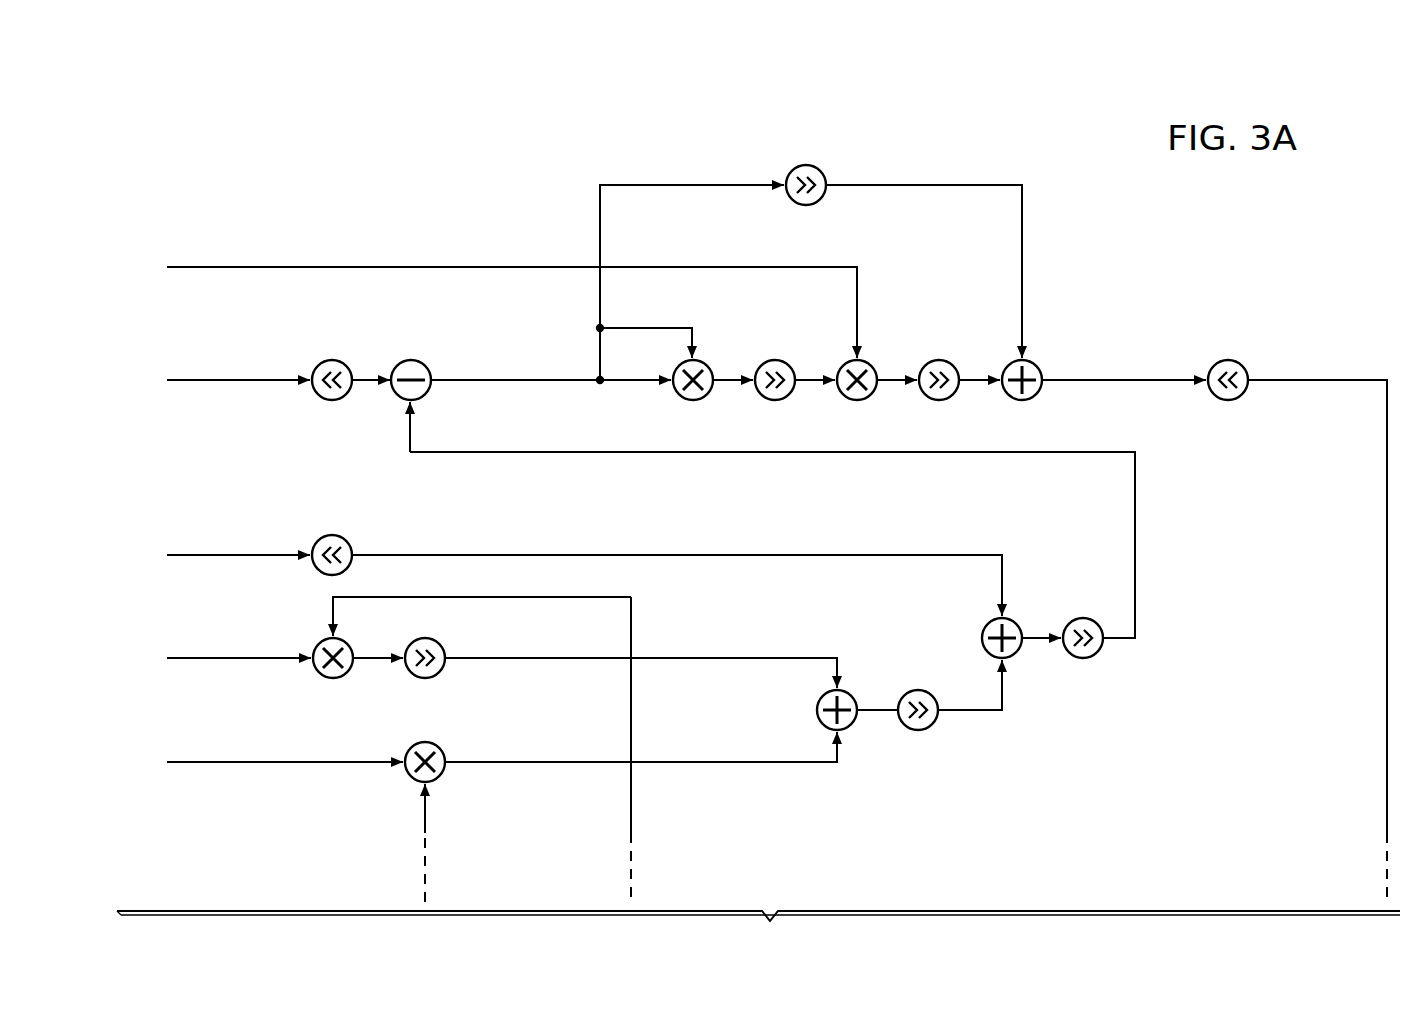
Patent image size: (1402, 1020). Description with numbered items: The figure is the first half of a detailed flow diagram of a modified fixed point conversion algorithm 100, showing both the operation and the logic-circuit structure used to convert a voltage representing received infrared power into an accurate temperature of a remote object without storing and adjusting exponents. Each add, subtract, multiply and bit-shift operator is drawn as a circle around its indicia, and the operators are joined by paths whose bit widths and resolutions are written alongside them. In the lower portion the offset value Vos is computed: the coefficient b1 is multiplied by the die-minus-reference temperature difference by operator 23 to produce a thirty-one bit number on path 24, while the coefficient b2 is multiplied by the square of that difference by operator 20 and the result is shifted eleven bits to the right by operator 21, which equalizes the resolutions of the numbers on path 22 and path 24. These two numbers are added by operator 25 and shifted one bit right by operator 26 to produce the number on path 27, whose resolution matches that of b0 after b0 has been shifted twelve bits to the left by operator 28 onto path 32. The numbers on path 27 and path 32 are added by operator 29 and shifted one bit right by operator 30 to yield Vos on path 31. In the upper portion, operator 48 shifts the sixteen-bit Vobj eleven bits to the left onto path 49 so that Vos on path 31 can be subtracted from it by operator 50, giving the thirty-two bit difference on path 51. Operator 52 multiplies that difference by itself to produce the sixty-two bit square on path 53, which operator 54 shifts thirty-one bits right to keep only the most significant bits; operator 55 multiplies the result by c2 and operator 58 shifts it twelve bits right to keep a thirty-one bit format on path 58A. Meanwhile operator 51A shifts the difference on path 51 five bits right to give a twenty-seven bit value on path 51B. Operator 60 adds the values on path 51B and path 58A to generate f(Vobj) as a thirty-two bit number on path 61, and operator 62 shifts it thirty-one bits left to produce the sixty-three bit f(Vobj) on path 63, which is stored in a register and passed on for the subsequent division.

The modified fixed point conversion algorithm 100 is at (450, 155).
The shift-left operator 48 is at (323, 400).
The path 49 is at (363, 385).
The subtraction operator 50 is at (397, 363).
The path 51 is at (565, 383).
The shift-right operator 51A is at (817, 205).
The path 51B is at (910, 187).
The multiplication operator 52 is at (703, 400).
The path 53 is at (730, 377).
The shift-right operator 54 is at (787, 400).
The multiplication operator 55 is at (868, 400).
The shift-right operator 58 is at (950, 400).
The path 58A is at (977, 377).
The addition operator 60 is at (1032, 400).
The path 61 is at (1162, 383).
The shift-left operator 62 is at (1238, 400).
The path 63 is at (1385, 613).
The multiplication operator 20 is at (313, 672).
The shift-right operator 21 is at (413, 679).
The path 22 is at (550, 657).
The multiplication operator 23 is at (412, 779).
The path 24 is at (730, 764).
The addition operator 25 is at (817, 700).
The shift-right operator 26 is at (930, 728).
The path 27 is at (1003, 690).
The shift-left operator 28 is at (313, 567).
The addition operator 29 is at (990, 617).
The shift-right operator 30 is at (1092, 658).
The path 31 is at (1135, 547).
The path 32 is at (590, 552).